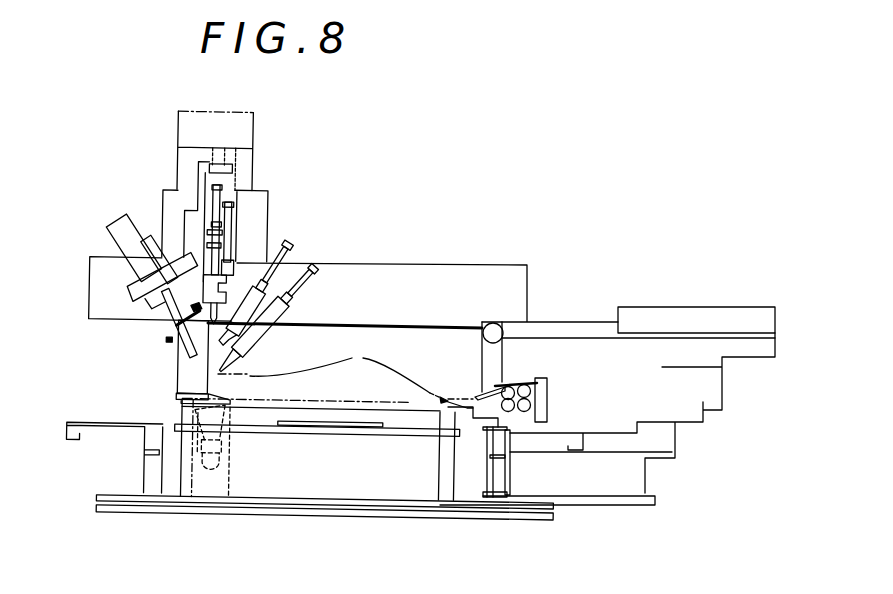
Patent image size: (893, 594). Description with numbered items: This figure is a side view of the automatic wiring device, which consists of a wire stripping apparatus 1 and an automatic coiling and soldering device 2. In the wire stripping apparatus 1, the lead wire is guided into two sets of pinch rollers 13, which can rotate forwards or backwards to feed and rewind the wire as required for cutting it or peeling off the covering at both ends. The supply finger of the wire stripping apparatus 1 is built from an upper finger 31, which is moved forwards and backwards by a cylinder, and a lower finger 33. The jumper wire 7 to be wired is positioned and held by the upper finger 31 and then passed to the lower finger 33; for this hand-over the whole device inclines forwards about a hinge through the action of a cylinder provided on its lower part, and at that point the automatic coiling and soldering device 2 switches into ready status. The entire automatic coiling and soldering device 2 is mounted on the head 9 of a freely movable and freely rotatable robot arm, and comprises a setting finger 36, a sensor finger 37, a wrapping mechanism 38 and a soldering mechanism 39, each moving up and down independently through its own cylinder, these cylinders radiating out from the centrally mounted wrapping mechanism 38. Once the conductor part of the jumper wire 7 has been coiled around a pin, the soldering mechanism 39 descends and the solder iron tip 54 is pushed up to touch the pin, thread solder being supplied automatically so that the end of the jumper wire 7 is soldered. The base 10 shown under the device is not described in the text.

The wire stripping apparatus 1 is at (624, 294).
The automatic coiling and soldering device 2 is at (152, 207).
The jumper wire 7 is at (345, 372).
The head 9 is at (243, 128).
The base plate 10 is at (330, 426).
The pinch rollers 13 is at (522, 390).
The upper finger 31 is at (482, 390).
The lower finger 33 is at (457, 423).
The setting finger 36 is at (298, 305).
The sensor finger 37 is at (272, 264).
The wrapping mechanism 38 is at (217, 247).
The soldering mechanism 39 is at (130, 268).
The solder iron tip 54 is at (203, 350).